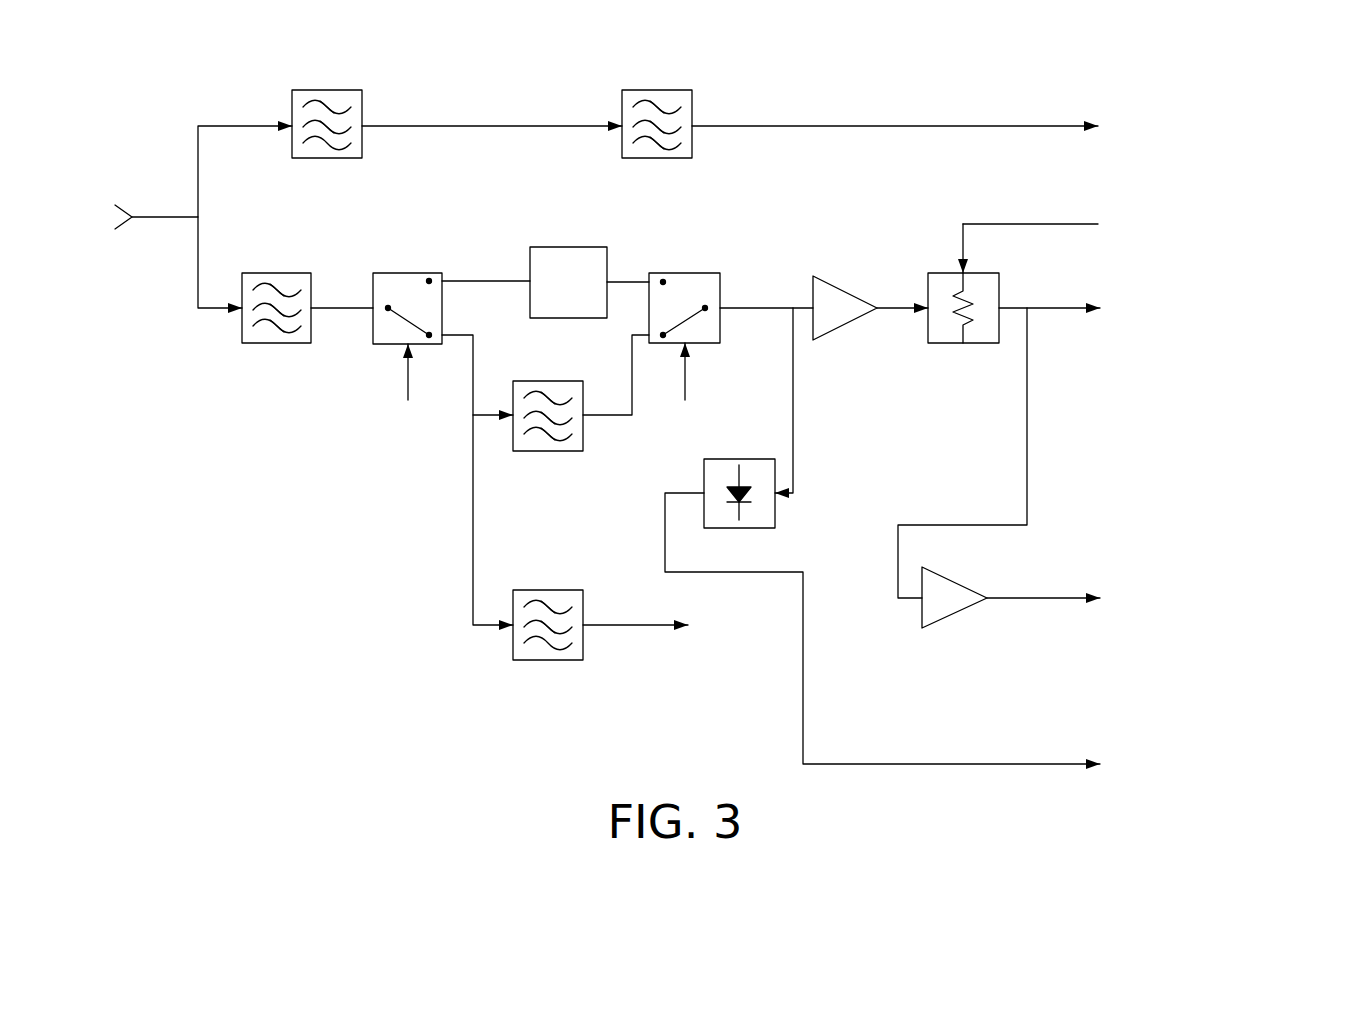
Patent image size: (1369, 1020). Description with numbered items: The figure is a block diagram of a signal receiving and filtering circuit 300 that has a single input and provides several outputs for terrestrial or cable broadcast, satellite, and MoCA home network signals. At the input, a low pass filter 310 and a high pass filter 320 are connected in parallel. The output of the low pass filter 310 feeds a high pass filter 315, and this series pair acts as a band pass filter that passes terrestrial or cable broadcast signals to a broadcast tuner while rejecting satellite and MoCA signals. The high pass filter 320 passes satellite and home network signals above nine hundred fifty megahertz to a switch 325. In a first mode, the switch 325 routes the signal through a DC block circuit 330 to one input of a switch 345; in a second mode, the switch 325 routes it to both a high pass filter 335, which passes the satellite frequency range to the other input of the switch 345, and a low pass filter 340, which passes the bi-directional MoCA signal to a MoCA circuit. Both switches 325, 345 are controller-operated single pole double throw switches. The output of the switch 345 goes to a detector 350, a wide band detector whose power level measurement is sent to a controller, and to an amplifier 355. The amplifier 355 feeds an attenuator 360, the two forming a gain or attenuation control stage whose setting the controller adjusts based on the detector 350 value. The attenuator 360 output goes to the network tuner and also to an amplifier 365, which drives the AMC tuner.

The signal receiving and filtering circuit 300 is at (145, 104).
The low pass filter 310 is at (326, 90).
The high pass filter 315 is at (656, 90).
The high pass filter 320 is at (275, 273).
The switch 325 is at (445, 308).
The DC block circuit 330 is at (567, 246).
The high pass filter 335 is at (547, 379).
The low pass filter 340 is at (547, 589).
The switch 345 is at (722, 290).
The detector 350 is at (704, 470).
The amplifier 355 is at (839, 286).
The attenuator 360 is at (1001, 290).
The amplifier 365 is at (954, 580).